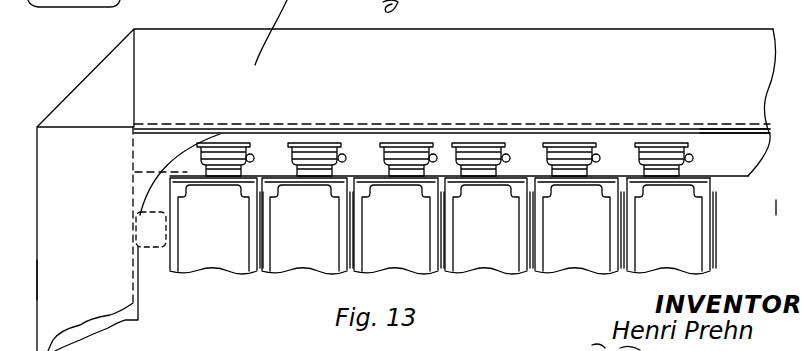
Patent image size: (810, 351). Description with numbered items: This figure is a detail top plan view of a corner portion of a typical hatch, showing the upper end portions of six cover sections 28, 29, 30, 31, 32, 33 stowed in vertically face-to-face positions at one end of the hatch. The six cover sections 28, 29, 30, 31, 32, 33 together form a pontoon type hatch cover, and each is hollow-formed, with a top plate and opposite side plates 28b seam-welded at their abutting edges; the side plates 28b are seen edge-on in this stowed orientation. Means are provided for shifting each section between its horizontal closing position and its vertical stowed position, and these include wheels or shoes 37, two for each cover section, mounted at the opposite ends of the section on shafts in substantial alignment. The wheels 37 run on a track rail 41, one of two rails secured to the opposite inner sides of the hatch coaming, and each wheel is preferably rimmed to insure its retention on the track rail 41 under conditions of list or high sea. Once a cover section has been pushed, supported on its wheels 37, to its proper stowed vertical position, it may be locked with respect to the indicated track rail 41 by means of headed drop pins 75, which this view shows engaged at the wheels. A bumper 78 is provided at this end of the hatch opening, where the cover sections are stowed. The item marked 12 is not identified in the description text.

The housing wall 12 is at (17, 242).
The cover section 28 is at (671, 208).
The cover section 29 is at (579, 208).
The cover section 30 is at (489, 208).
The cover section 31 is at (399, 208).
The cover section 32 is at (307, 214).
The cover section 33 is at (216, 226).
The wheels or shoes 37 is at (227, 155).
The track rail 41 is at (735, 152).
The headed pin 75 is at (253, 156).
The bumper 78 is at (157, 232).
The side plate 28b is at (688, 180).